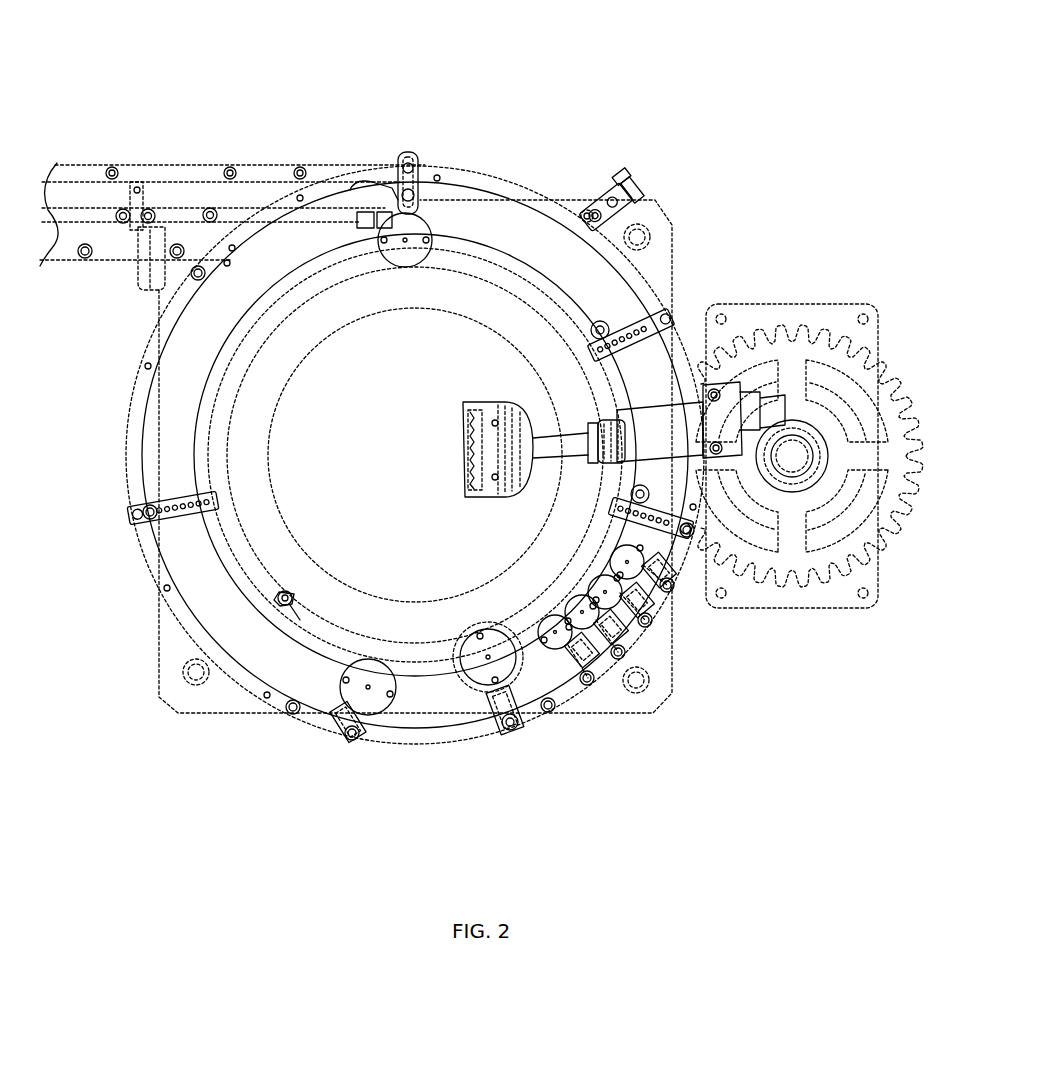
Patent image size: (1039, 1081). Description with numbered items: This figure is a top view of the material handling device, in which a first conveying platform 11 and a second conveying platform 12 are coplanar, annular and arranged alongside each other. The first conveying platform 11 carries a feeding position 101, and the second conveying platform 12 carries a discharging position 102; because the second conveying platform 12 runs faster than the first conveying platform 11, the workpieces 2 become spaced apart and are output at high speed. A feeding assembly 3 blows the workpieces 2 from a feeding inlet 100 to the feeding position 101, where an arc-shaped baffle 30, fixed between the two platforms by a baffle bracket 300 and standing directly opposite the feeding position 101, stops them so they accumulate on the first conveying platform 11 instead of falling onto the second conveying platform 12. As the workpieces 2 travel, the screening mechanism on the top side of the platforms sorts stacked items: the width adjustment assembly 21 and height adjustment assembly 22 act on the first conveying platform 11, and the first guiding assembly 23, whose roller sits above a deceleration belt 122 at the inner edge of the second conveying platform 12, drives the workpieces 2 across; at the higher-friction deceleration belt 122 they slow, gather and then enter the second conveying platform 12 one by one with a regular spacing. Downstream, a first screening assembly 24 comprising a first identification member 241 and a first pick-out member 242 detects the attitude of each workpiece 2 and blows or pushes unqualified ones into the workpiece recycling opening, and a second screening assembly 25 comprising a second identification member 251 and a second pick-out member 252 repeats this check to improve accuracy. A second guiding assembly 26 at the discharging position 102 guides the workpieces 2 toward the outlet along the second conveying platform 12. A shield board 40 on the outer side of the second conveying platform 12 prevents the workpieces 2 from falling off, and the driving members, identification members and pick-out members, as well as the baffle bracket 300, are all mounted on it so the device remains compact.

The feeding inlet 100 is at (383, 353).
The feeding position 101 is at (218, 405).
The discharging position 102 is at (363, 183).
The first conveying platform 11 is at (285, 312).
The second conveying platform 12 is at (432, 702).
The deceleration belt 122 is at (538, 650).
The workpiece 2 is at (282, 300).
The width adjustment assembly 21 is at (370, 700).
The height adjustment assembly 22 is at (495, 668).
The first guiding assembly 23 is at (560, 640).
The first screening assembly 24 is at (868, 842).
The first identification member 241 is at (655, 525).
The first pick-out member 242 is at (690, 340).
The second screening assembly 25 is at (586, 62).
The second identification member 251 is at (598, 332).
The second pick-out member 252 is at (610, 205).
The second guiding assembly 26 is at (407, 223).
The feeding assembly 3 is at (550, 440).
The arc-shaped baffle 30 is at (237, 338).
The baffle bracket 300 is at (193, 620).
The shield board 40 is at (215, 605).